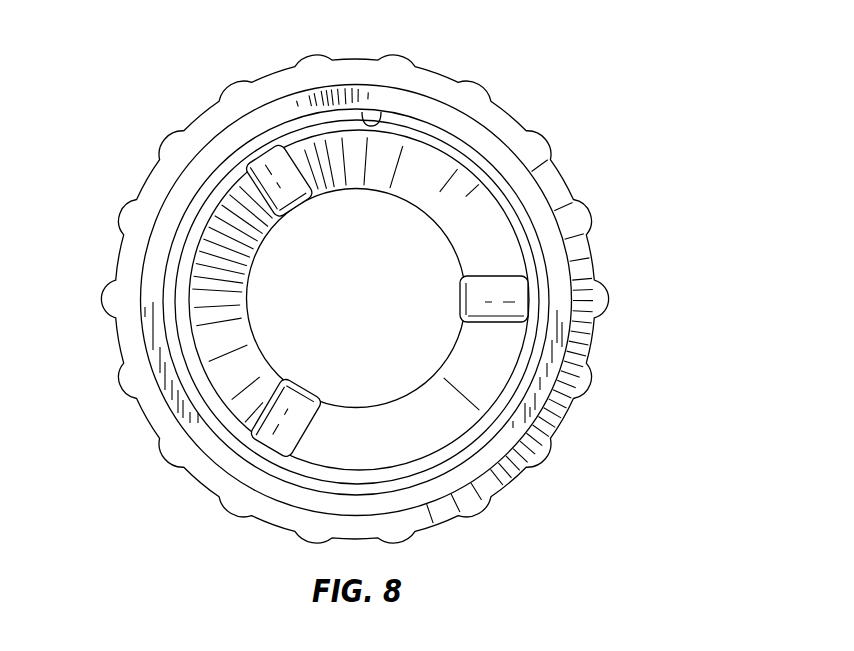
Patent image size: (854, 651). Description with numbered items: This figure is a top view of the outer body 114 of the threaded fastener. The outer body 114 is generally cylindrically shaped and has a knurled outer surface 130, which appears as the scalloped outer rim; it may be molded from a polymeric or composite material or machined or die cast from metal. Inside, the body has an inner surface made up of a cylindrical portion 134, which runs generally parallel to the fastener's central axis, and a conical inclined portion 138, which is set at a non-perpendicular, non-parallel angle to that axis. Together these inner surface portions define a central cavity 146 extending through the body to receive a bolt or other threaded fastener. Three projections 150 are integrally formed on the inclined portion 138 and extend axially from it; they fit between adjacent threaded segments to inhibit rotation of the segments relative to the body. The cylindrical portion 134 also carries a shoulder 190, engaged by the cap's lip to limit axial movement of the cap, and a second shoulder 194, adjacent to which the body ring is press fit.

The outer body 114 is at (349, 277).
The knurled outer surface 130 is at (572, 416).
The cylindrical portion 134 is at (379, 118).
The inclined portion 138 is at (427, 183).
The central cavity 146 is at (205, 308).
The projections 150 is at (292, 190).
The shoulder 190 is at (428, 125).
The shoulder 194 is at (205, 208).